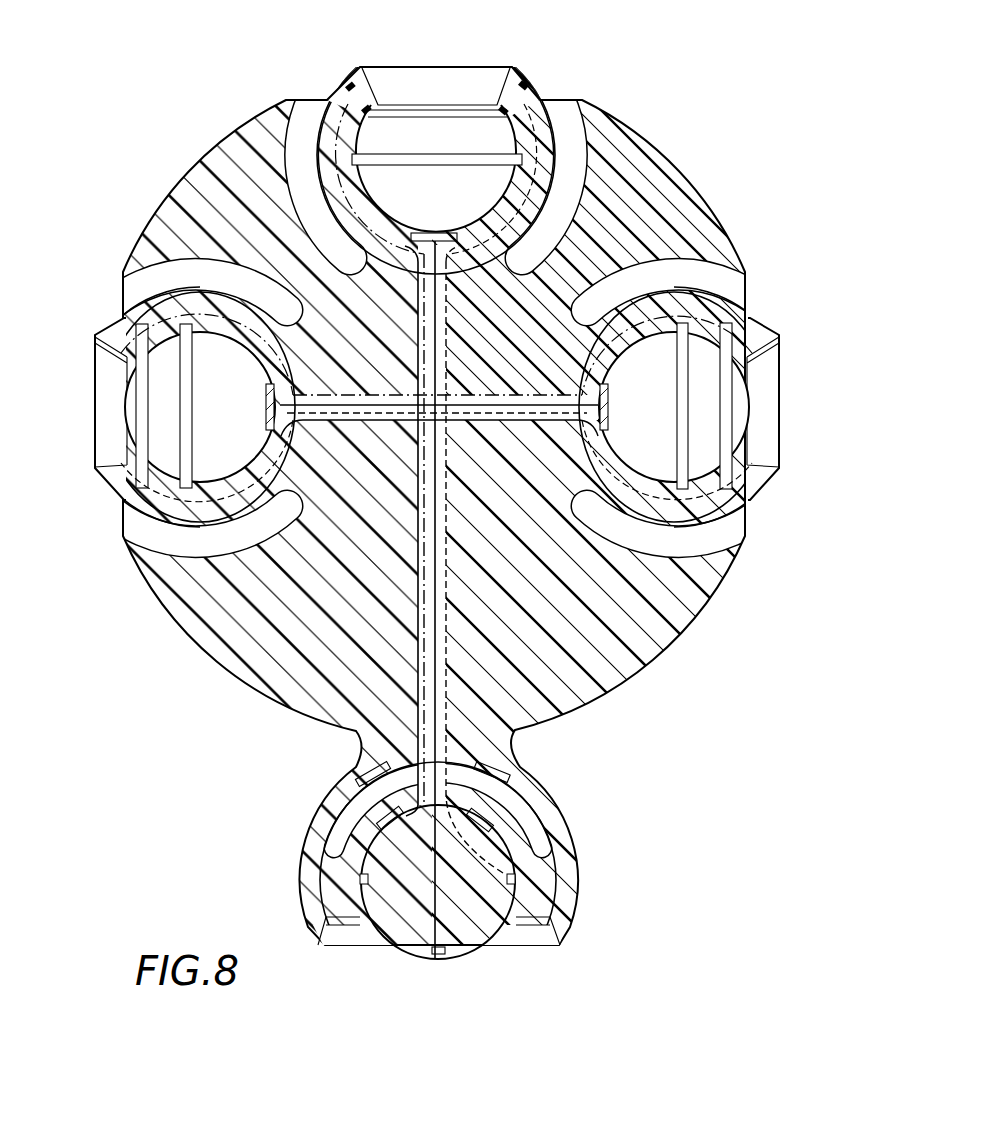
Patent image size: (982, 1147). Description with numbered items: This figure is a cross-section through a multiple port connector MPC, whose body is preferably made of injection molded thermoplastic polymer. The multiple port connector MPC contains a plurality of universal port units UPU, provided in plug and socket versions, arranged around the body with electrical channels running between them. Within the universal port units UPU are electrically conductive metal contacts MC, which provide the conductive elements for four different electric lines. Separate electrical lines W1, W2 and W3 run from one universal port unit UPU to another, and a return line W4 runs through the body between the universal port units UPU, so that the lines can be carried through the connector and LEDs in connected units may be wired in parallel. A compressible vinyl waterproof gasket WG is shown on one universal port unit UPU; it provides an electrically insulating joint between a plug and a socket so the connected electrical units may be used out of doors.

The multiple port connector MPC is at (657, 620).
The universal port unit UPU is at (530, 117).
The metal contacts MC is at (427, 233).
The waterproof gasket WG is at (485, 948).
The electrical line W1 is at (527, 393).
The electrical line W2 is at (503, 422).
The electrical line W3 is at (383, 395).
The return line W4 is at (365, 422).